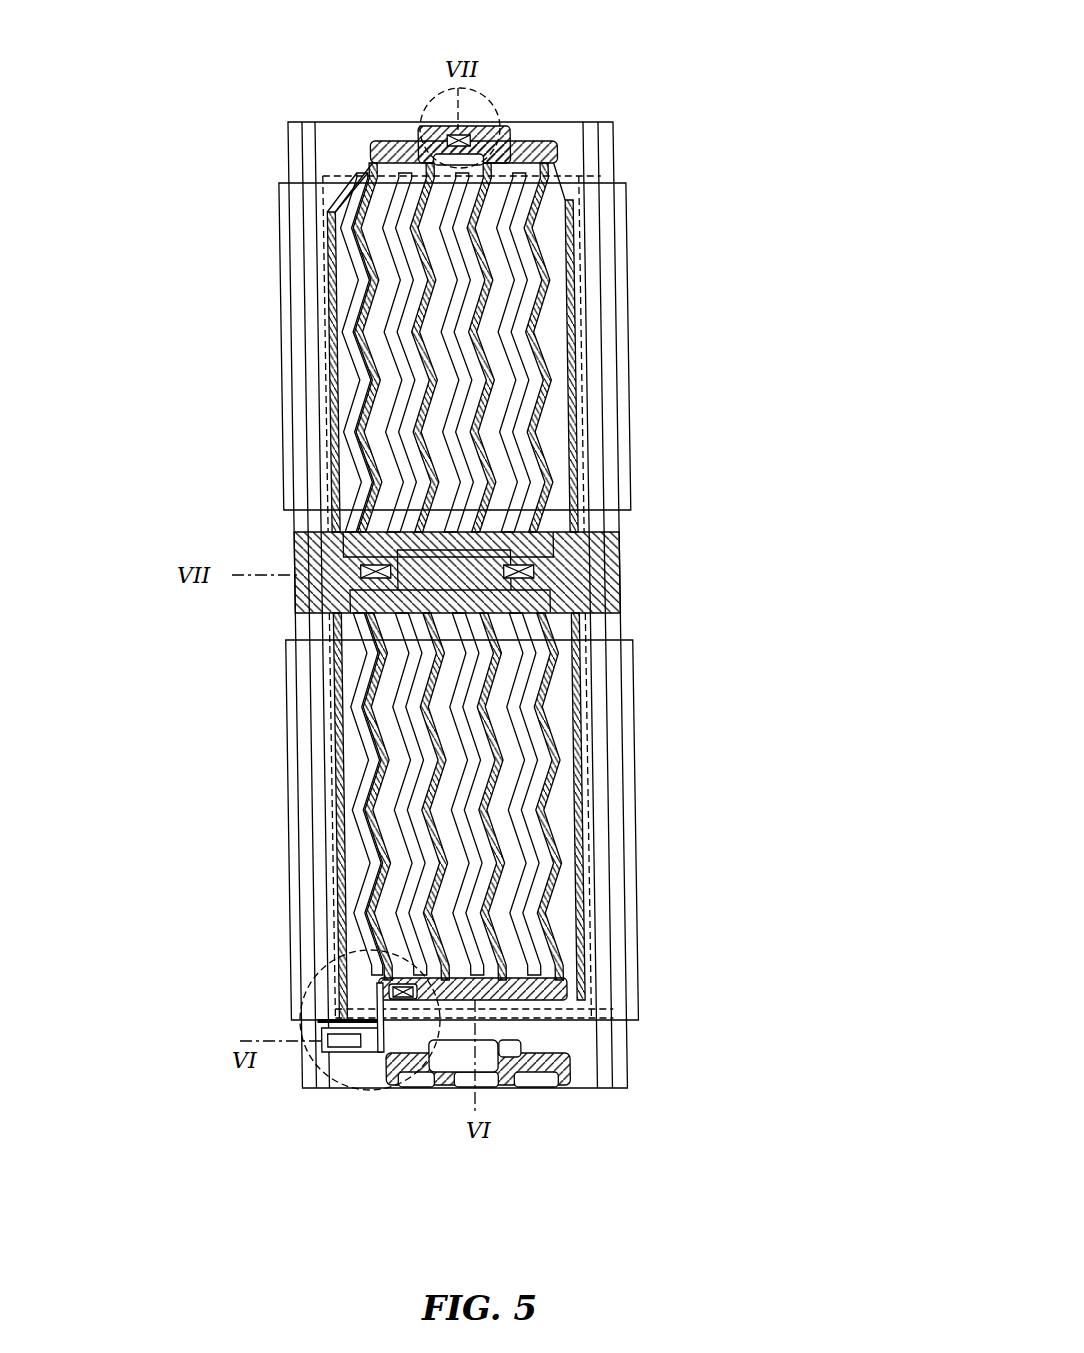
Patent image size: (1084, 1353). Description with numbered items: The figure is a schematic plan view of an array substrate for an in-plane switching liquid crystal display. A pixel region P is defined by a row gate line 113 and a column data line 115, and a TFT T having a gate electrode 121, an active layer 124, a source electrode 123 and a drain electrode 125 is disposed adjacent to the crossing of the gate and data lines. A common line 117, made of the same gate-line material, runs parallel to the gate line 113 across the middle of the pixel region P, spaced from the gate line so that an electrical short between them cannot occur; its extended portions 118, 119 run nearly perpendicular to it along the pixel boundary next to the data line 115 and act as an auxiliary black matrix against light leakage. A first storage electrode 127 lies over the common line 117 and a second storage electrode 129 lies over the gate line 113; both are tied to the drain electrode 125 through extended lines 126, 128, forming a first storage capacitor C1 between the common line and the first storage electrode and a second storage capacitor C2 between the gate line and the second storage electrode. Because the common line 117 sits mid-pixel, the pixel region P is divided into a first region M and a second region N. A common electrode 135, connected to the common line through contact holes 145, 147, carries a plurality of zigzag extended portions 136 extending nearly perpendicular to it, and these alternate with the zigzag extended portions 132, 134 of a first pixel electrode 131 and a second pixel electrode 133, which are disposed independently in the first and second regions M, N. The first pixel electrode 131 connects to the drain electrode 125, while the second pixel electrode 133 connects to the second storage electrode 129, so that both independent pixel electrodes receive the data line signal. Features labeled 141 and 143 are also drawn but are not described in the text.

The gate line 113 is at (560, 1012).
The data line 115 is at (310, 871).
The common line 117 is at (595, 640).
The extended portion 118 is at (597, 813).
The extended portion 119 is at (583, 430).
The gate electrode 121 is at (355, 1022).
The source electrode 123 is at (333, 1048).
The active layer 124 is at (360, 1052).
The drain electrode 125 is at (405, 995).
The extended line 126 is at (498, 888).
The first storage electrode 127 is at (597, 586).
The extended line 128 is at (522, 480).
The second storage electrode 129 is at (506, 133).
The first pixel electrode 131 is at (590, 986).
The extended portion 132 is at (590, 953).
The second pixel electrode 133 is at (544, 214).
The extended portion 134 is at (583, 232).
The common electrode 135 is at (382, 534).
The extended portion 136 is at (396, 500).
The semiconductor layer 141 is at (420, 1042).
The contact hole 143 is at (462, 135).
The contact hole 145 is at (300, 560).
The contact hole 147 is at (580, 570).
The first storage capacitor C1 is at (585, 525).
The second storage capacitor C2 is at (435, 117).
The pixel region P is at (583, 236).
The second region N is at (620, 306).
The first region M is at (633, 765).
The TFT T is at (410, 1078).